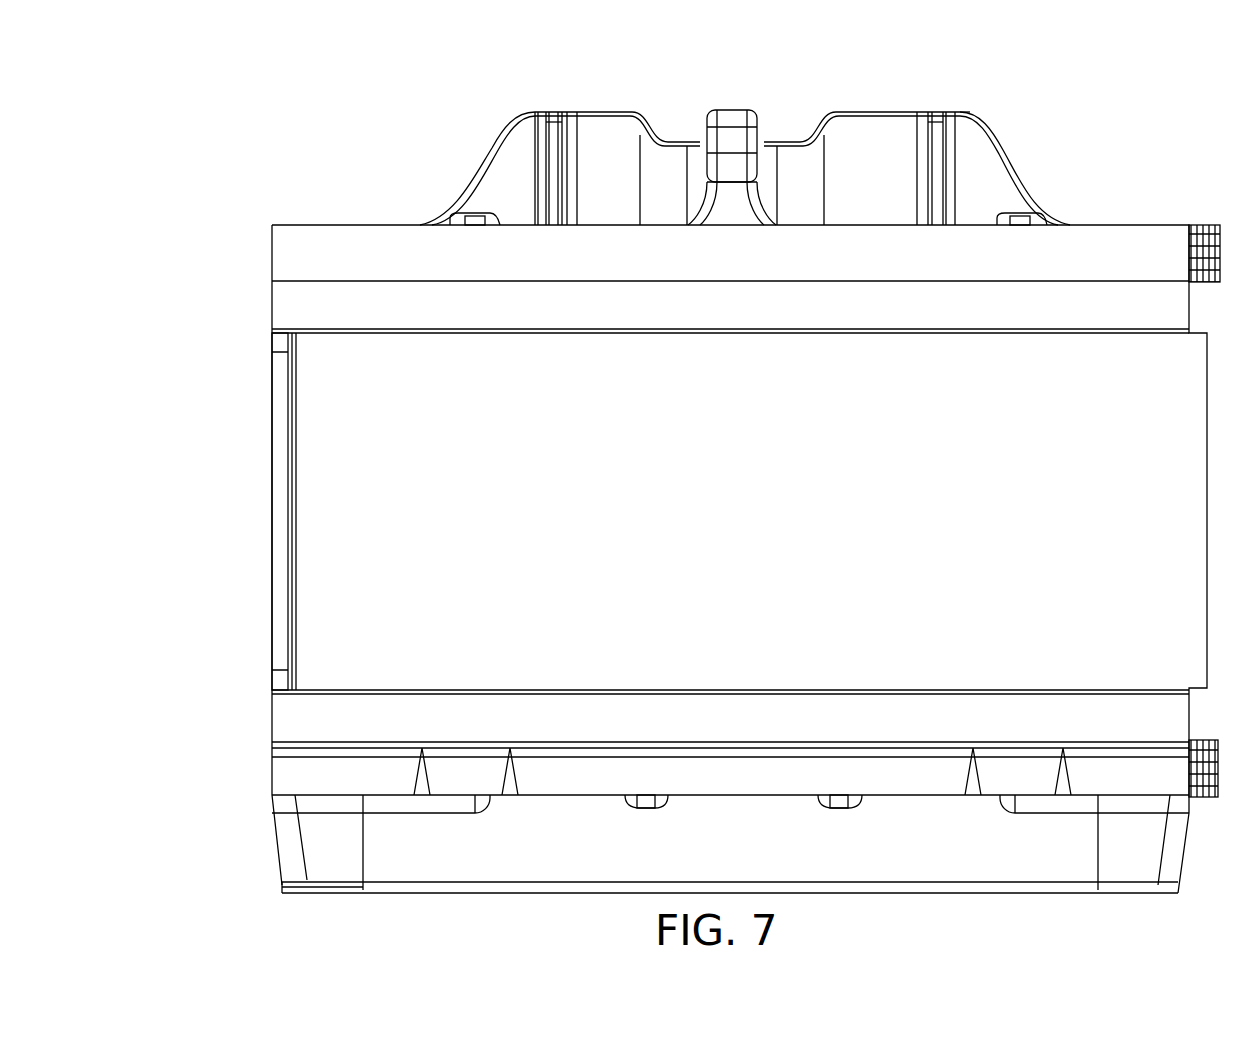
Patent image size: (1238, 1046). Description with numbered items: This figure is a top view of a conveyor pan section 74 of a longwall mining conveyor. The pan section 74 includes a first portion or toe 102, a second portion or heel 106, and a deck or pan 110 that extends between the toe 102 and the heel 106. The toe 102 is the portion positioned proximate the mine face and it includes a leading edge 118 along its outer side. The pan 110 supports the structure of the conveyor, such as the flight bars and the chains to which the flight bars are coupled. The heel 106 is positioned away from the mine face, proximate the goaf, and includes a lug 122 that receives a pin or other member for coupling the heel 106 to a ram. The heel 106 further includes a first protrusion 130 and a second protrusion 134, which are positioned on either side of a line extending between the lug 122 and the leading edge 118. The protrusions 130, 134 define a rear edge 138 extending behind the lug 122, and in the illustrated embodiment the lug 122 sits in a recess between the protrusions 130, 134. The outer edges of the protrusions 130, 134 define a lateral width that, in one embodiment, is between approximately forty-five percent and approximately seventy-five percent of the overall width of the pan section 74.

The pan section 74 is at (190, 152).
The toe 102 is at (263, 818).
The heel 106 is at (1078, 172).
The pan 110 is at (305, 505).
The leading edge 118 is at (345, 895).
The lug 122 is at (760, 126).
The first protrusion 130 is at (595, 123).
The second protrusion 134 is at (980, 152).
The rear edge 138 is at (905, 112).